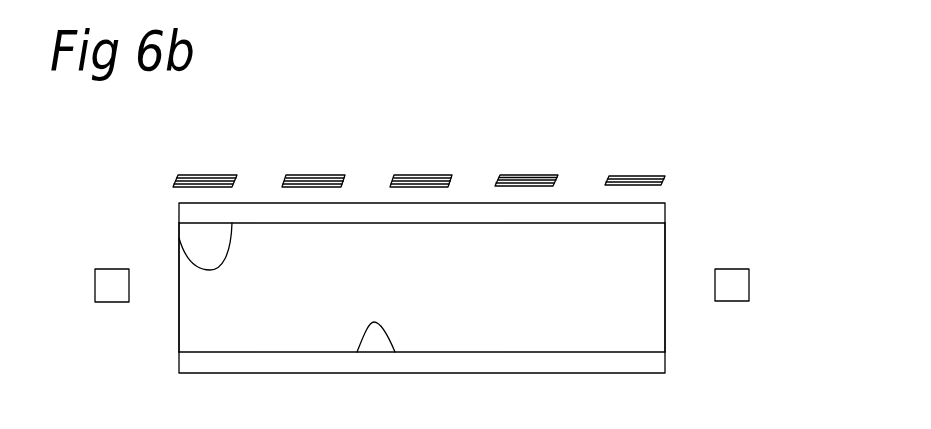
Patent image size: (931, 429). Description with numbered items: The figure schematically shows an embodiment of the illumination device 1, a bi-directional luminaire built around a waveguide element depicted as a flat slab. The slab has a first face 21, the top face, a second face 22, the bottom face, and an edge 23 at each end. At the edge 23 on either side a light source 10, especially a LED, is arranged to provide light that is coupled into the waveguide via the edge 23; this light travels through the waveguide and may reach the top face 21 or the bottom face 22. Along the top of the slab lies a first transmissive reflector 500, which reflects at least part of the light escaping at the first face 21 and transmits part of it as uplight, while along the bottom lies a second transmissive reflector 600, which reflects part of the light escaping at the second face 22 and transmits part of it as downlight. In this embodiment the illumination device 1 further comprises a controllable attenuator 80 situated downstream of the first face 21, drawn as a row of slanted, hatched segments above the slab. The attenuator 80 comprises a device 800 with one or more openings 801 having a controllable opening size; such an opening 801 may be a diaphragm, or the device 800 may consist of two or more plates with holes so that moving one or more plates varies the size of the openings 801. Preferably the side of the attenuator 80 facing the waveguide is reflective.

The illumination device 1 is at (572, 150).
The light source 10 is at (112, 288).
The first face 21 is at (178, 247).
The second face 22 is at (357, 352).
The edge 23 is at (179, 338).
The controllable attenuator 80 is at (460, 160).
The device 800 is at (249, 165).
The opening 801 is at (270, 180).
The first transmissive reflector 500 is at (652, 215).
The second transmissive reflector 600 is at (547, 362).